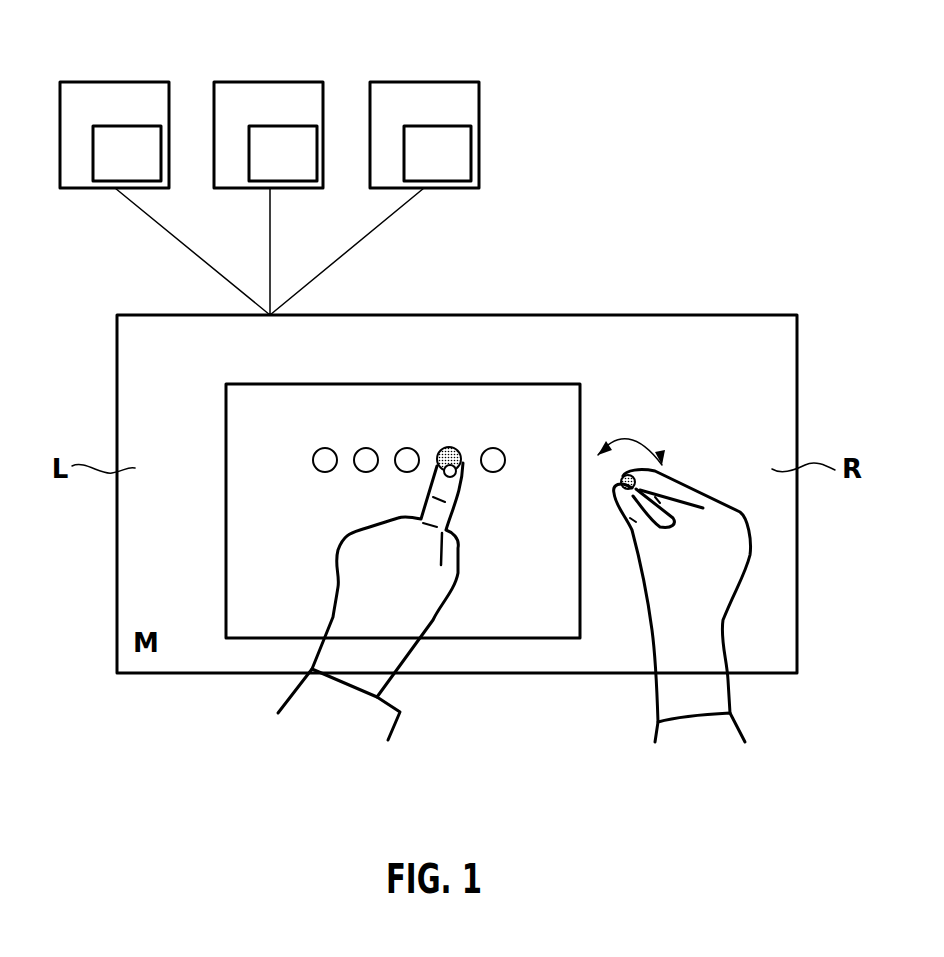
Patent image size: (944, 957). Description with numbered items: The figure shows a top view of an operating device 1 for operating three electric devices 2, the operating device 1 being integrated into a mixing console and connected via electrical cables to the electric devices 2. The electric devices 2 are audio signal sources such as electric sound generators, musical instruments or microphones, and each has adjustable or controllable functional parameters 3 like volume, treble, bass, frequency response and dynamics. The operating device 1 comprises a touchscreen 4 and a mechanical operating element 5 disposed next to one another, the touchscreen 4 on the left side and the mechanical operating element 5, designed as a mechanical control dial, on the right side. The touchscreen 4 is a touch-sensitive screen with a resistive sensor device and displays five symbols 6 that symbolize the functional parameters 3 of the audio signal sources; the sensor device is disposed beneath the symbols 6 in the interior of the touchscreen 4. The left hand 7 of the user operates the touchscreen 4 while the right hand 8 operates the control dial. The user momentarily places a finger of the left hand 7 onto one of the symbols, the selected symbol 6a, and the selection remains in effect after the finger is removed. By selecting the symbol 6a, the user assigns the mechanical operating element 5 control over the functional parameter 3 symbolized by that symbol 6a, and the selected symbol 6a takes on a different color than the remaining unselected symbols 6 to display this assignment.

The operating device 1 is at (590, 306).
The electric device 2 is at (97, 88).
The functional parameter 3 is at (139, 133).
The touchscreen 4 is at (332, 410).
The mechanical operating element 5 is at (626, 493).
The symbol 6 is at (408, 466).
The selected symbol 6a is at (449, 446).
The left hand 7 is at (410, 641).
The right hand 8 is at (727, 647).